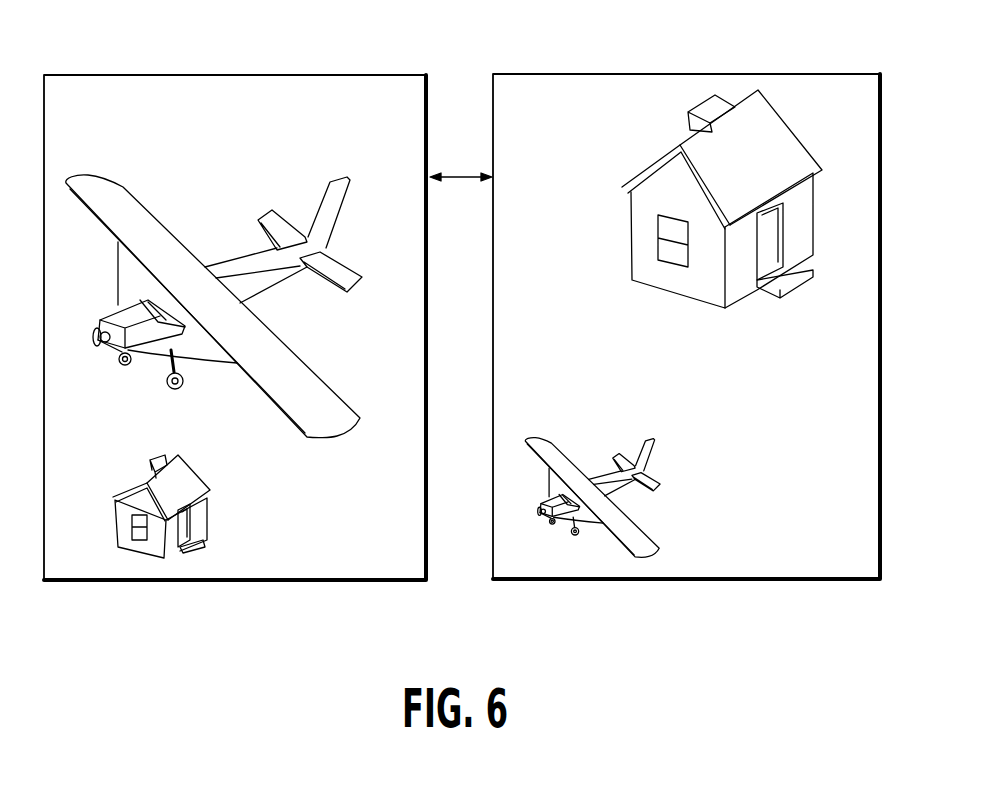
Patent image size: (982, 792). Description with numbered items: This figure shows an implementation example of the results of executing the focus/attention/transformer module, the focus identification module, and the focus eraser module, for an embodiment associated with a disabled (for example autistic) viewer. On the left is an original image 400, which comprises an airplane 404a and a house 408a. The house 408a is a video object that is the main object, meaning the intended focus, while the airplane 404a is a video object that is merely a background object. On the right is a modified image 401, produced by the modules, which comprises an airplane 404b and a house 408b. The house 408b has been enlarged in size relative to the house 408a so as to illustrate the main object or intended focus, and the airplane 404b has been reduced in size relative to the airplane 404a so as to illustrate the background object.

The original image 400 is at (345, 75).
The modified image 401 is at (764, 74).
The airplane 404a is at (175, 248).
The airplane 404b is at (563, 465).
The house 408a is at (207, 512).
The house 408b is at (647, 248).